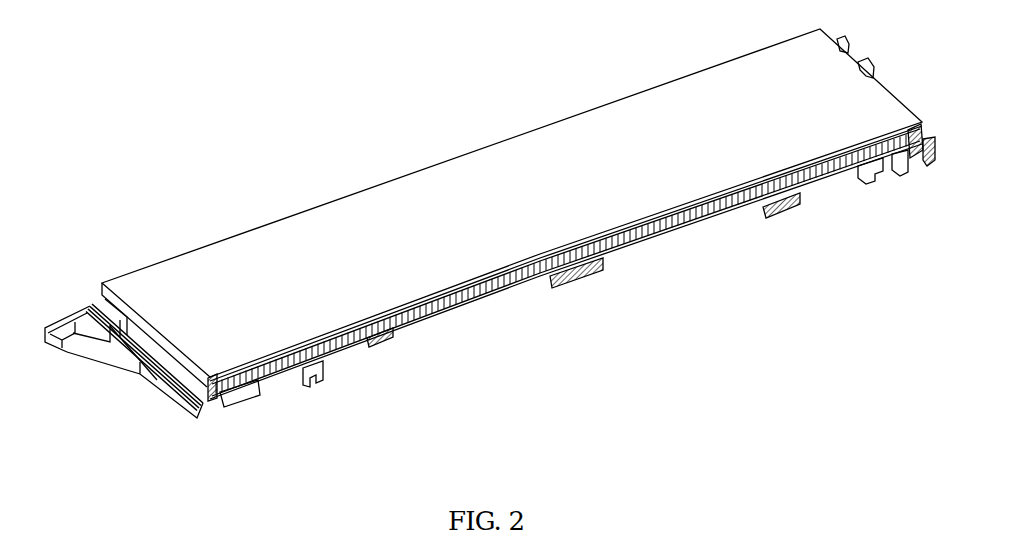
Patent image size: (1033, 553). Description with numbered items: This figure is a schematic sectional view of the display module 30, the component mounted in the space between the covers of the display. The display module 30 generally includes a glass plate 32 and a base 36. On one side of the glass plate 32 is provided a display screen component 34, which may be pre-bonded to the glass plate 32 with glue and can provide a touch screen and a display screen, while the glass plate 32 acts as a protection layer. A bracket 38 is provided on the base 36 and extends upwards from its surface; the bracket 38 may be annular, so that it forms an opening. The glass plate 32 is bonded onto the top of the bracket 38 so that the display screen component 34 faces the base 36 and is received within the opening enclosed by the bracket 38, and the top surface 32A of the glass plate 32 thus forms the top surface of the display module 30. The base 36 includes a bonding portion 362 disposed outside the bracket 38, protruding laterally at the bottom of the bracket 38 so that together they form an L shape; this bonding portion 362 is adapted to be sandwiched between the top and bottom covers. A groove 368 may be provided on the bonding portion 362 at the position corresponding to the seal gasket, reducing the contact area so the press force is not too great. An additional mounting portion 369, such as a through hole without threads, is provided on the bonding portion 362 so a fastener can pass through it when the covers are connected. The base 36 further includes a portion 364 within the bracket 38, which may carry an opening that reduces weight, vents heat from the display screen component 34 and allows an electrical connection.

The display module 30 is at (166, 34).
The glass plate 32 is at (312, 208).
The top surface of the glass plate 32A is at (428, 187).
The display screen component 34 is at (492, 293).
The base 36 is at (222, 426).
The bracket 38 is at (210, 380).
The bonding portion 362 is at (197, 418).
The portion within the bracket 364 is at (262, 383).
The groove 368 is at (197, 387).
The additional mounting portion 369 is at (78, 308).